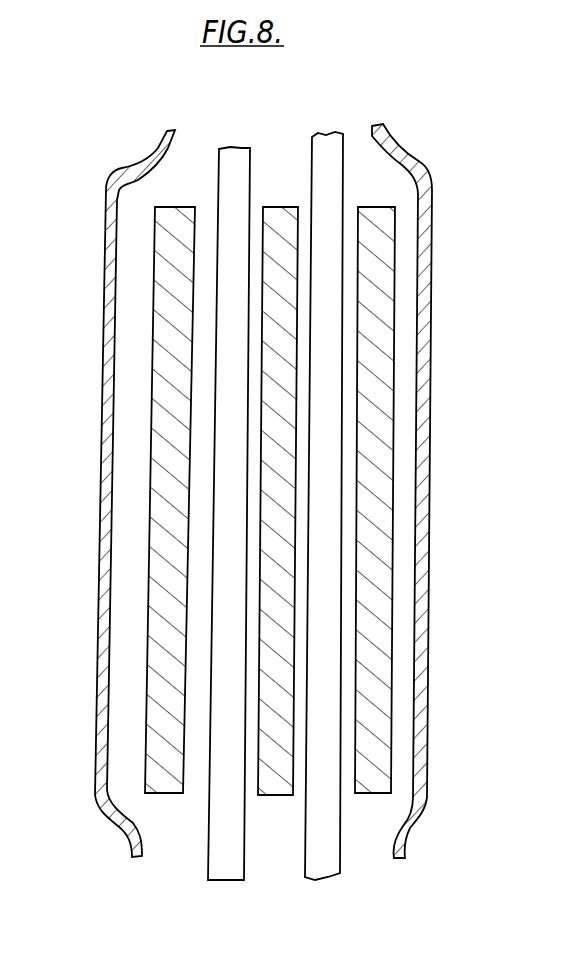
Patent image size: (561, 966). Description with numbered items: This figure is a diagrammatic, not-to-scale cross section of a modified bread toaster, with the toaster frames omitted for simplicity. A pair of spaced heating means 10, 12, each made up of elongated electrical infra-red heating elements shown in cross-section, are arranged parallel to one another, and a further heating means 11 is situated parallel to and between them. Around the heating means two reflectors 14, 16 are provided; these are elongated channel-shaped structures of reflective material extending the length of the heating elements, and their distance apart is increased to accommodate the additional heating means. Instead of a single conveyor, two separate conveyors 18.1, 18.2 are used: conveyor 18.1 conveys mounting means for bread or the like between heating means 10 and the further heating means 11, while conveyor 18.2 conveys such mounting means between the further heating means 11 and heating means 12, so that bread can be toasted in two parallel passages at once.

The heating means 10 is at (170, 255).
The further heating means 11 is at (287, 217).
The heating means 12 is at (375, 253).
The reflector 14 is at (97, 557).
The reflector 16 is at (427, 560).
The conveyor 18.1 is at (233, 153).
The conveyor 18.2 is at (327, 145).